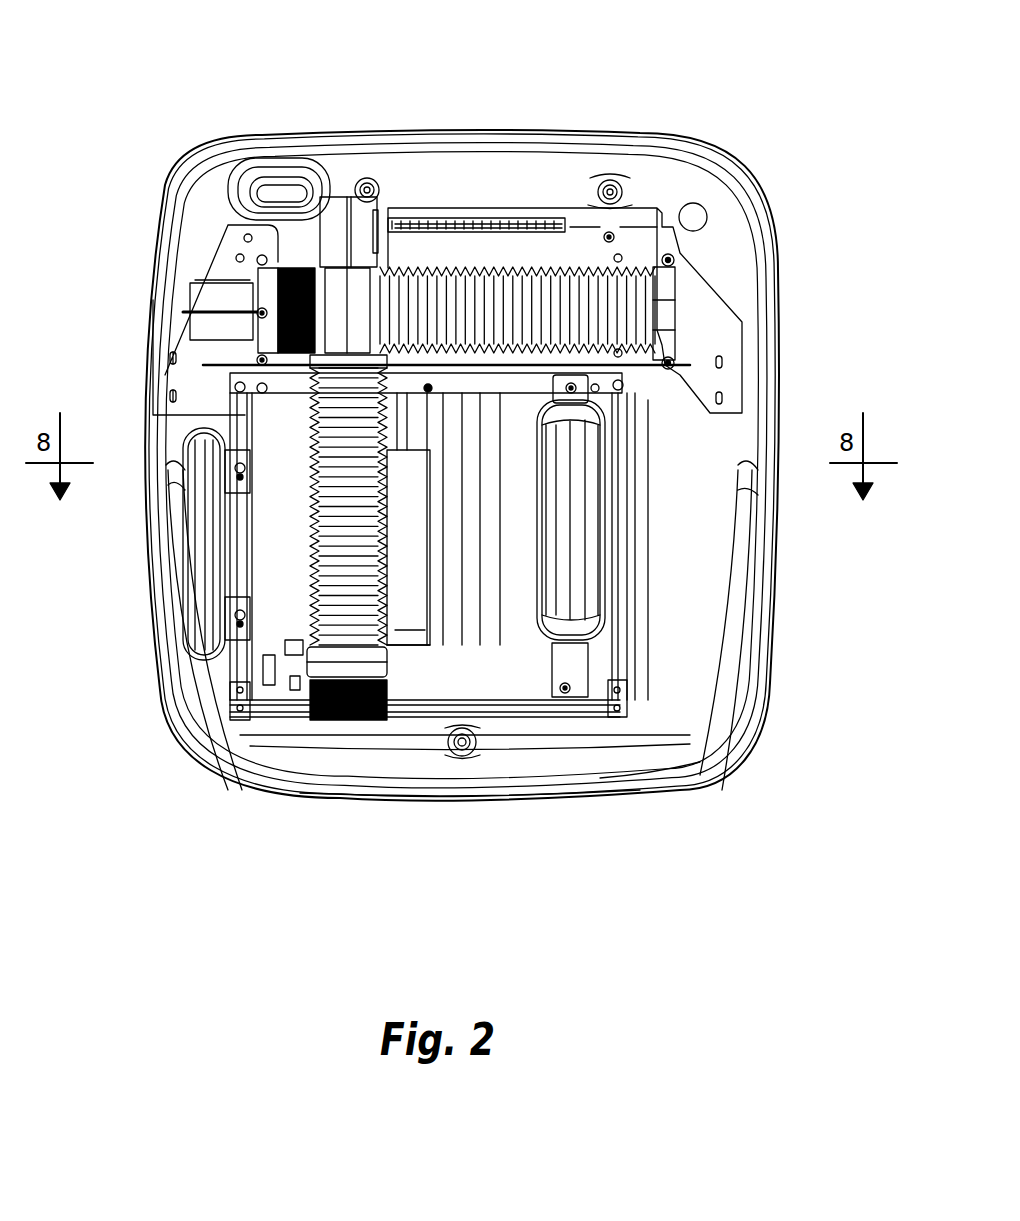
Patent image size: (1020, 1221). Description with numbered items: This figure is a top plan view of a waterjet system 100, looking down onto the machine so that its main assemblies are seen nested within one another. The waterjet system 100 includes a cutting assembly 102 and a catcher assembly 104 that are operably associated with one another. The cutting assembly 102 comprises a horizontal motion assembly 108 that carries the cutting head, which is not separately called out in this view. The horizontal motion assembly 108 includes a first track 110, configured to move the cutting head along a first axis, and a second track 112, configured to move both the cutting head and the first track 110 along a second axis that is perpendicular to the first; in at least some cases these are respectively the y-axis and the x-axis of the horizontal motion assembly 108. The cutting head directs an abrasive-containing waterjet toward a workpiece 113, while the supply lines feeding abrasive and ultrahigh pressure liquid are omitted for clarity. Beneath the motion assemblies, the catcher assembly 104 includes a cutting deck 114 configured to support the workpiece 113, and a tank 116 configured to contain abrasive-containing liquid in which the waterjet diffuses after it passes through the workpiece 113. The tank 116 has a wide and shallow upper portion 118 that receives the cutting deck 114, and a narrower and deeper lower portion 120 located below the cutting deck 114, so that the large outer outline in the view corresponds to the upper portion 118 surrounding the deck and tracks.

The waterjet system 100 is at (752, 102).
The cutting assembly 102 is at (226, 258).
The horizontal motion assembly 108 is at (565, 310).
The catcher assembly 104 is at (353, 897).
The first track 110 is at (325, 573).
The second track 112 is at (450, 287).
The workpiece 113 is at (430, 582).
The cutting deck 114 is at (413, 653).
The tank 116 is at (463, 812).
The upper portion 118 is at (657, 765).
The lower portion 120 is at (645, 607).